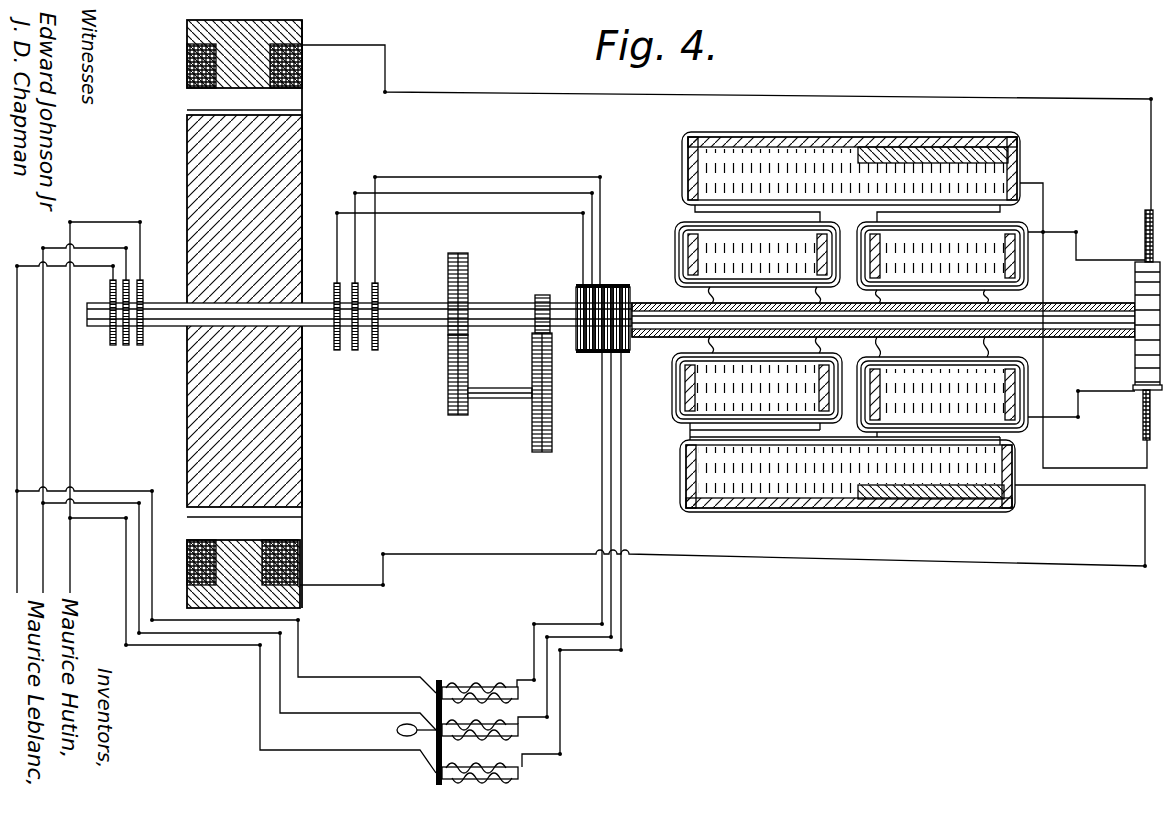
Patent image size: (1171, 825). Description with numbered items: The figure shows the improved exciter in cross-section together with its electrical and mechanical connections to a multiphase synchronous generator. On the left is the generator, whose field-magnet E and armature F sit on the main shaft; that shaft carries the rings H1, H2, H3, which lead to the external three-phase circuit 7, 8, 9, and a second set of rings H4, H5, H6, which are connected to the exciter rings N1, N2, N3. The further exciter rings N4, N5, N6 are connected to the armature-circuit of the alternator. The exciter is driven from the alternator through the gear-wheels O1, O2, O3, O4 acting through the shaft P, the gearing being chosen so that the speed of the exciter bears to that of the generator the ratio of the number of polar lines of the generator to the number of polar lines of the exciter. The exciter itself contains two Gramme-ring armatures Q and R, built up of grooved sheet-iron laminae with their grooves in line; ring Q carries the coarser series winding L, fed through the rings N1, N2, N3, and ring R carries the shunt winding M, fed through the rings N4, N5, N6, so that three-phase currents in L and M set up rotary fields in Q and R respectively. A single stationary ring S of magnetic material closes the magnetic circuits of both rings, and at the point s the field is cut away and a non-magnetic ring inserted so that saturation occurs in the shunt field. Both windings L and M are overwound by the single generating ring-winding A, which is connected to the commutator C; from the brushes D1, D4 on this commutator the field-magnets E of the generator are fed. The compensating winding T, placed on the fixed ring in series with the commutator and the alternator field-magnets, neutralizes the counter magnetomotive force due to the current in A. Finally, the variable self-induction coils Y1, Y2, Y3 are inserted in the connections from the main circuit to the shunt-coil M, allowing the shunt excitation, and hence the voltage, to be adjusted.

The field-magnet E is at (240, 53).
The armature F is at (238, 170).
The ring H1 is at (112, 347).
The ring H2 is at (126, 347).
The ring H3 is at (140, 347).
The ring H4 is at (337, 352).
The ring H5 is at (355, 352).
The ring H6 is at (375, 352).
The external circuit 7 is at (73, 452).
The external circuit 8 is at (45, 452).
The external circuit 9 is at (17, 452).
The gear-wheel O1 is at (468, 300).
The gear-wheel O2 is at (468, 388).
The gear-wheel O3 is at (532, 445).
The gear-wheel O4 is at (535, 300).
The shaft P is at (505, 402).
The exciter ring N1 is at (580, 352).
The exciter ring N2 is at (589, 352).
The exciter ring N3 is at (598, 352).
The exciter ring N4 is at (605, 286).
The exciter ring N5 is at (614, 286).
The exciter ring N6 is at (623, 286).
The ring of magnetic material S is at (826, 170).
The non-magnetic ring s is at (985, 160).
The compensating winding T is at (951, 140).
The series winding L is at (685, 385).
The Gramme-ring armature Q is at (717, 400).
The shunt winding M is at (1020, 415).
The Gramme-ring armature R is at (963, 400).
The ring-winding A is at (1029, 407).
The commutator C is at (1135, 362).
The brush D1 is at (1143, 218).
The brush D4 is at (1140, 408).
The variable self-induction coil Y1 is at (500, 678).
The variable self-induction coil Y2 is at (505, 718).
The variable self-induction coil Y3 is at (505, 755).